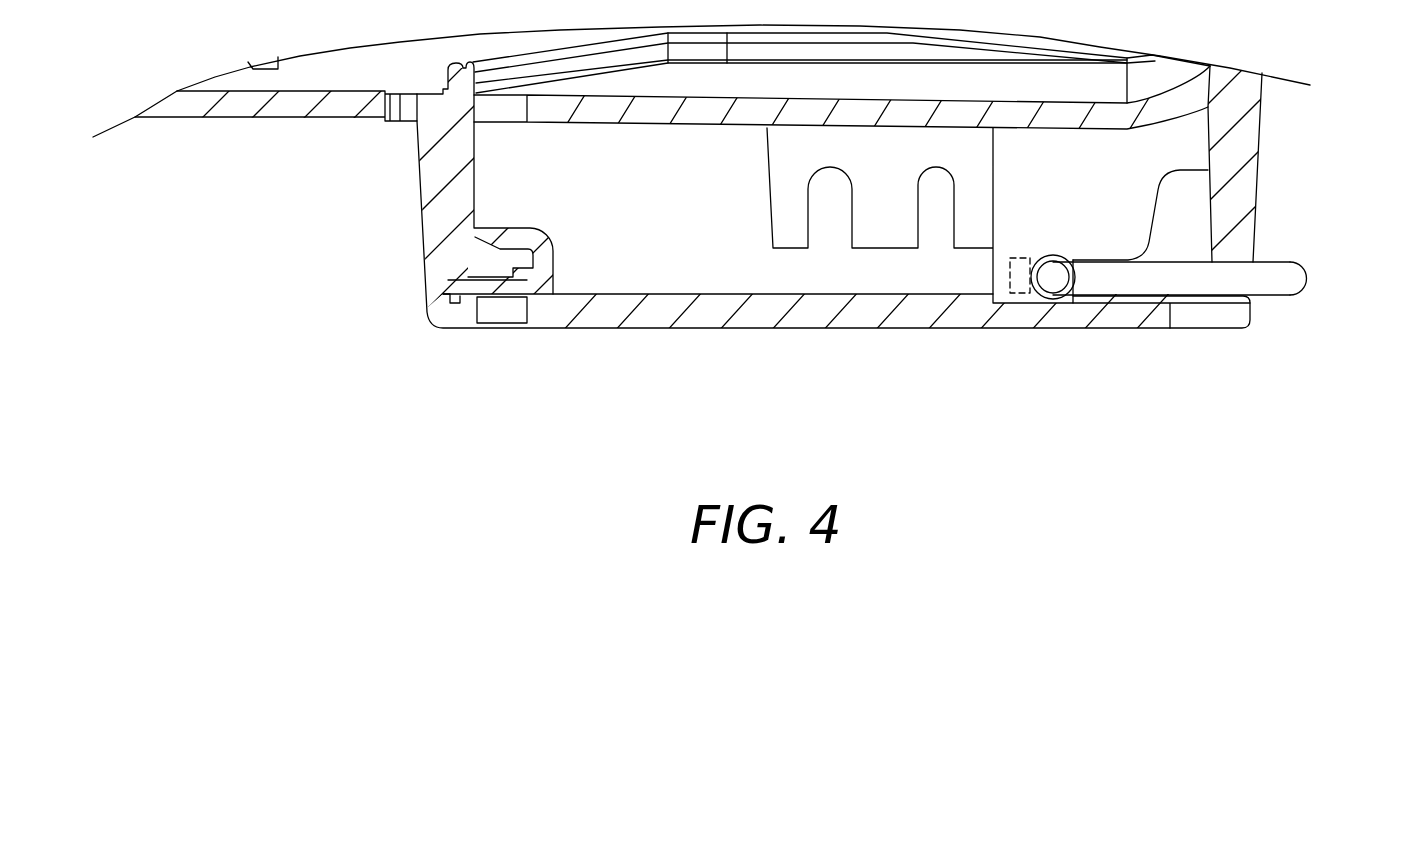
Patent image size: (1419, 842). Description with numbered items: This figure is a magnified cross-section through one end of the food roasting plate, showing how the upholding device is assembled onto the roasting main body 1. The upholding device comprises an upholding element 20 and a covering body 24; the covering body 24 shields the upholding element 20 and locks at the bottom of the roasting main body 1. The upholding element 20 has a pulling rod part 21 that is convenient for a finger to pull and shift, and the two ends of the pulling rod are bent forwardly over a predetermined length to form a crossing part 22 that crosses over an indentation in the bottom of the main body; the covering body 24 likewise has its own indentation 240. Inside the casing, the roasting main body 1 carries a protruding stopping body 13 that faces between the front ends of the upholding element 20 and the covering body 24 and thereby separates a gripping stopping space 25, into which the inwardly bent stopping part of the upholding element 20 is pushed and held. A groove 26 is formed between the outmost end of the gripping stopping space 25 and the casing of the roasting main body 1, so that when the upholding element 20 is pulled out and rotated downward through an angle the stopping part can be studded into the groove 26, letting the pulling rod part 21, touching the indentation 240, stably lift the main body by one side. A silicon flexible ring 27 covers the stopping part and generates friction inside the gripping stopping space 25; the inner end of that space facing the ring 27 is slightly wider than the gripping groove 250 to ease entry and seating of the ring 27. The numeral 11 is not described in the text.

The roasting main body 1 is at (1245, 135).
The top wall of housing 11 is at (300, 110).
The protruding stopping body 13 is at (997, 268).
The upholding element 20 is at (1325, 259).
The pulling rod part 21 is at (1303, 295).
The crossing part 22 is at (1155, 283).
The covering body 24 is at (714, 318).
The indentation 240 is at (1208, 316).
The gripping stopping space 25 is at (1113, 280).
The gripping groove 250 is at (1062, 254).
The groove 26 is at (1187, 187).
The silicon flexible ring 27 is at (1033, 288).